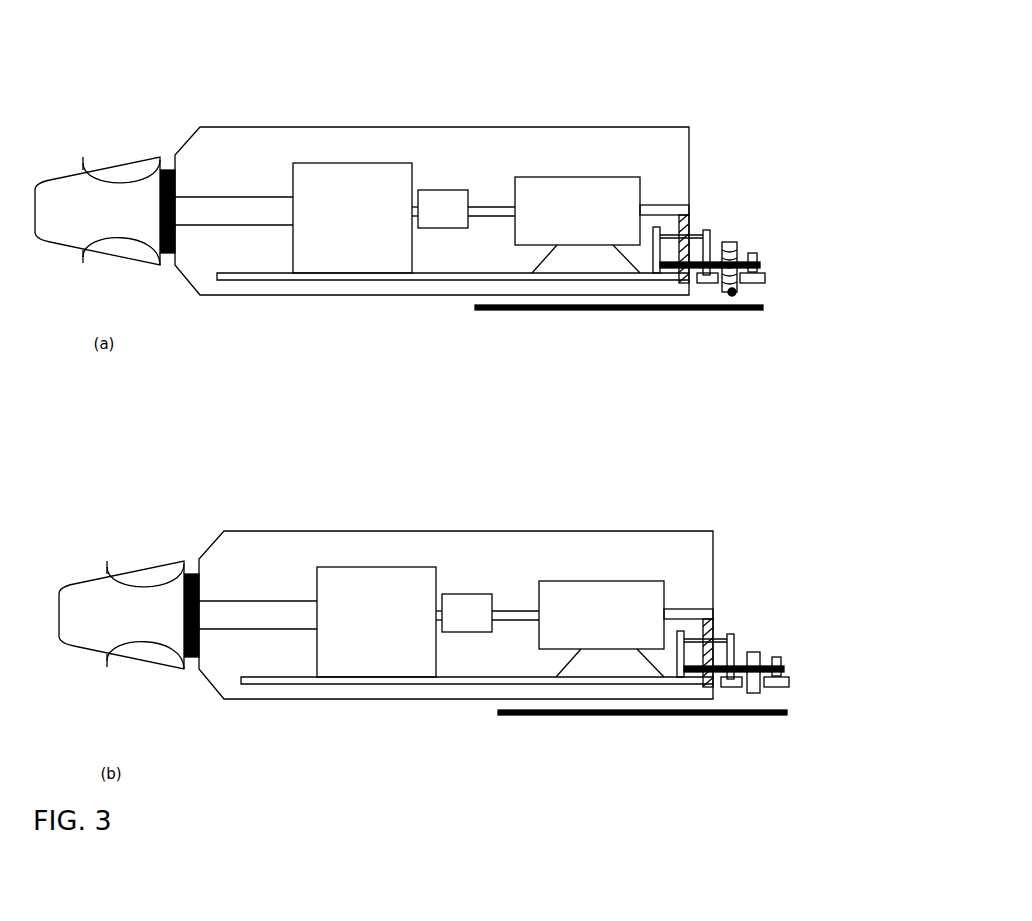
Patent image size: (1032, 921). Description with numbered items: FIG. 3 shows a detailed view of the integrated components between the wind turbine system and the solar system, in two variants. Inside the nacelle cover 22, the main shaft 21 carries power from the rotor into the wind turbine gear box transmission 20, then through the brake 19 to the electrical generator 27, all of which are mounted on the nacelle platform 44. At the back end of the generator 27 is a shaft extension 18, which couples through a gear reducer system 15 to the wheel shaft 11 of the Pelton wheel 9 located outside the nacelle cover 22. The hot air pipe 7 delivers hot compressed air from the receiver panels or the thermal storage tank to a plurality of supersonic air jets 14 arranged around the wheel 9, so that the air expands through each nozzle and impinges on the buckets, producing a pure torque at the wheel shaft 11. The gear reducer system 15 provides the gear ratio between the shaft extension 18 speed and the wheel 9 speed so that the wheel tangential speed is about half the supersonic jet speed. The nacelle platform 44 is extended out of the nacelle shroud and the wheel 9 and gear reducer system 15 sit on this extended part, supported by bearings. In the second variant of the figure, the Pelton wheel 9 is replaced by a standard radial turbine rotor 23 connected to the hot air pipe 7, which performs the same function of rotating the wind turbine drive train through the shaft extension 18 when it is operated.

The hot air pipe 7 is at (476, 310).
The wheel 9 is at (737, 288).
The wheel shaft 11 is at (692, 283).
The supersonic air jets 14 is at (735, 293).
The gear reducer system 15 is at (689, 223).
The shaft extension 18 is at (665, 205).
The brake 19 is at (443, 190).
The wind turbine gear box transmission 20 is at (348, 163).
The main shaft 21 is at (239, 197).
The nacelle cover 22 is at (512, 127).
The radial turbine rotor 23 is at (760, 693).
The generator 27 is at (584, 177).
The nacelle platform 44 is at (282, 280).